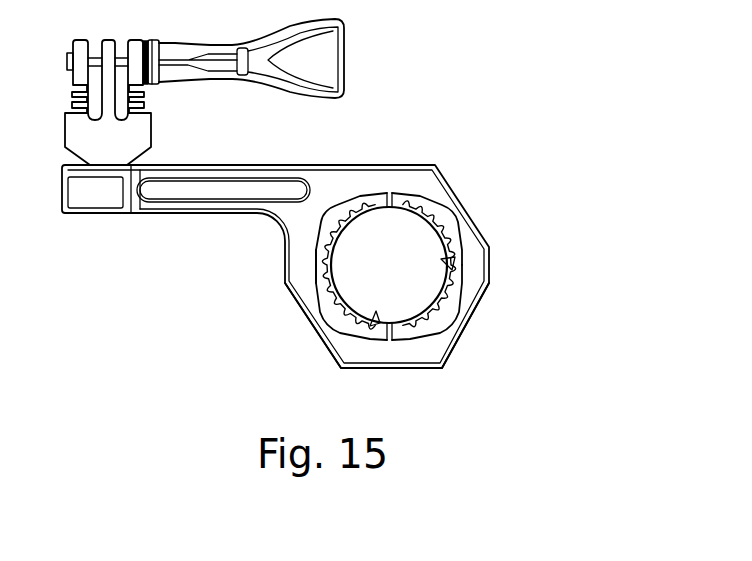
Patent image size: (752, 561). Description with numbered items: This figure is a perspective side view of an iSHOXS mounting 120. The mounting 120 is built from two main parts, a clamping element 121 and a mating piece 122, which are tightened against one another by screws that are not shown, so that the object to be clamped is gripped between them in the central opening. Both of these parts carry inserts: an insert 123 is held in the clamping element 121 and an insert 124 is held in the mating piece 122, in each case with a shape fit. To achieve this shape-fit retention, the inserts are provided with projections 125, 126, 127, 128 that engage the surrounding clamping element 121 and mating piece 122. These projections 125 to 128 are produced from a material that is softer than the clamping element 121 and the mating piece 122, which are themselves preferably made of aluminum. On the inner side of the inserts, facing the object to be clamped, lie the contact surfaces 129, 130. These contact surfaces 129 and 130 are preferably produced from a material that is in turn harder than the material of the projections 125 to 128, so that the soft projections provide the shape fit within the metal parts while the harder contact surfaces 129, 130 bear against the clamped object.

The iSHOXS mounting 120 is at (325, 229).
The clamping element 121 is at (305, 318).
The mating piece 122 is at (483, 298).
The insert 123 is at (318, 272).
The insert 124 is at (457, 243).
The projection 125 is at (332, 213).
The projection 126 is at (333, 326).
The projection 127 is at (442, 208).
The projection 128 is at (450, 318).
The contact surface 129 is at (376, 322).
The contact surface 130 is at (453, 262).